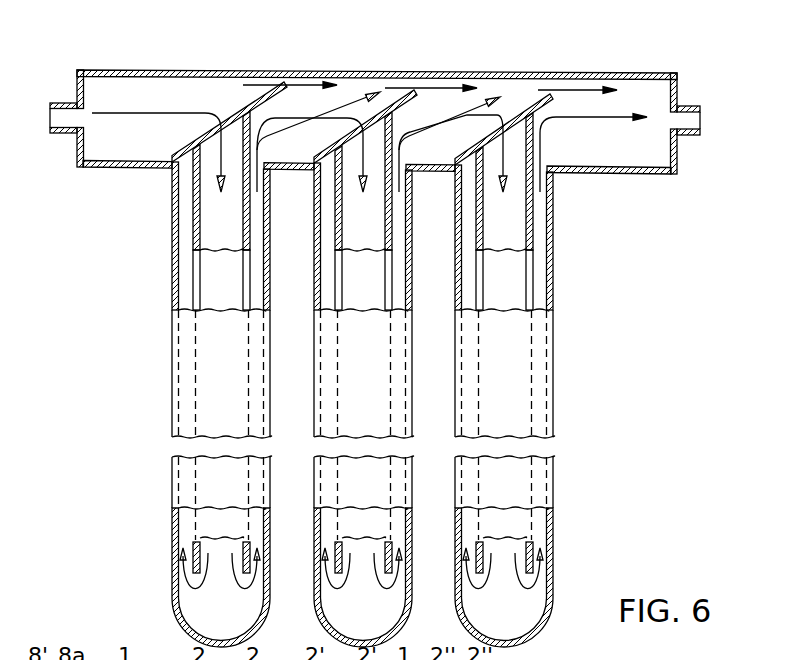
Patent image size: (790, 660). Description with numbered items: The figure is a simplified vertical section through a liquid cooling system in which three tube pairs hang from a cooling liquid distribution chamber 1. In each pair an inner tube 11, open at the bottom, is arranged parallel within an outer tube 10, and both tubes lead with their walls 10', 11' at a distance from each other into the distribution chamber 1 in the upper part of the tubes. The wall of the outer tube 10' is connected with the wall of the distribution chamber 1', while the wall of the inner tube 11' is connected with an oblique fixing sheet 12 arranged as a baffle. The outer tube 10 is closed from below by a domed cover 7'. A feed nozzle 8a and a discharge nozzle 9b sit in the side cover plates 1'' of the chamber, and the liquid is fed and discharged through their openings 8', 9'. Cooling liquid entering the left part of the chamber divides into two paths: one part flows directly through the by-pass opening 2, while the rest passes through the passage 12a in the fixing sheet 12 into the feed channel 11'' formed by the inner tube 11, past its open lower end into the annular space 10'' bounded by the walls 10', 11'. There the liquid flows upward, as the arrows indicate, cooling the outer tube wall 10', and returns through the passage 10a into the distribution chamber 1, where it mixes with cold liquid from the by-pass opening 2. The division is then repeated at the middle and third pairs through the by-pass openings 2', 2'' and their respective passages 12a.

The cooling liquid distribution chamber 1 is at (377, 92).
The wall of the cooling liquid distribution chamber 1' is at (77, 187).
The side cover plates of the cooling liquid distribution chamber 1'' is at (703, 97).
The by-pass opening 2 is at (242, 86).
The by-pass opening 2' is at (387, 86).
The by-pass opening 2'' is at (530, 87).
The domed cover 7' is at (149, 597).
The feed opening 8' is at (52, 71).
The feed nozzle 8a is at (63, 103).
The discharge opening 9' is at (703, 97).
The discharge nozzle 9b is at (690, 134).
The outer tube 10 is at (361, 404).
The passage 10a is at (207, 196).
The wall of the outer tube 10' is at (363, 318).
The annular space 10'' is at (366, 318).
The inner tube 11 is at (358, 350).
The wall of the inner tube 11' is at (362, 254).
The feed channel 11'' is at (162, 340).
The fixing sheet 12 is at (267, 68).
The passage 12a is at (218, 132).